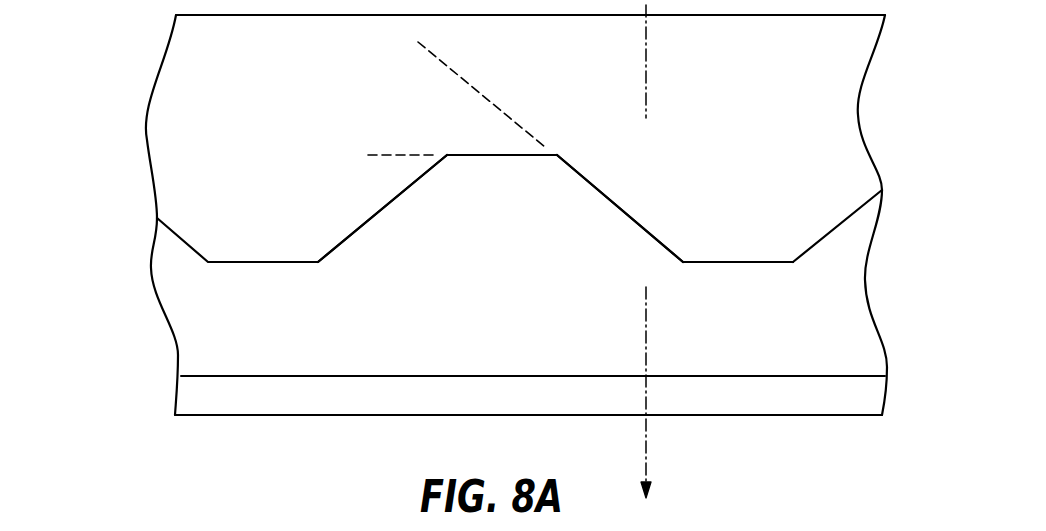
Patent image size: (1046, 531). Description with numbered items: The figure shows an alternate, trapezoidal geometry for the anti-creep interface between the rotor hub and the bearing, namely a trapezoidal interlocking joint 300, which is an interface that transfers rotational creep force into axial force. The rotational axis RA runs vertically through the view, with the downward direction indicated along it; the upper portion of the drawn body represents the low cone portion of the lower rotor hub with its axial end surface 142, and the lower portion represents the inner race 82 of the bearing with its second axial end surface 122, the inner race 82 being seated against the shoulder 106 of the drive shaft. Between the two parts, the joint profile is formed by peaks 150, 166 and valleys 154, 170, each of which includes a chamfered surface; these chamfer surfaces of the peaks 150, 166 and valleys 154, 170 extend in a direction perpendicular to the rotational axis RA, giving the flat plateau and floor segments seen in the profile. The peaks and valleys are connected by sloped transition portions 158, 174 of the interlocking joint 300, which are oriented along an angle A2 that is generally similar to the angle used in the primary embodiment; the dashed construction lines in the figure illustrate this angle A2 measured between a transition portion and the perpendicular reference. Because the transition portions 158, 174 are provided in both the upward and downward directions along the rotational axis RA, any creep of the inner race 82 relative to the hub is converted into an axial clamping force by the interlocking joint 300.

The trapezoidal interlocking joint 300 is at (148, 212).
The shoulder 106 is at (249, 385).
The inner race 82 is at (293, 330).
The axial end surface 142 is at (372, 213).
The second axial end surface 122 is at (377, 218).
The peak 150 is at (481, 160).
The valley 170 is at (498, 150).
The transition portion 174 is at (618, 205).
The transition portion 158 is at (608, 205).
The peak 166 is at (745, 258).
The valley 154 is at (736, 267).
The angle A2 is at (435, 62).
The rotational axis RA is at (646, 338).